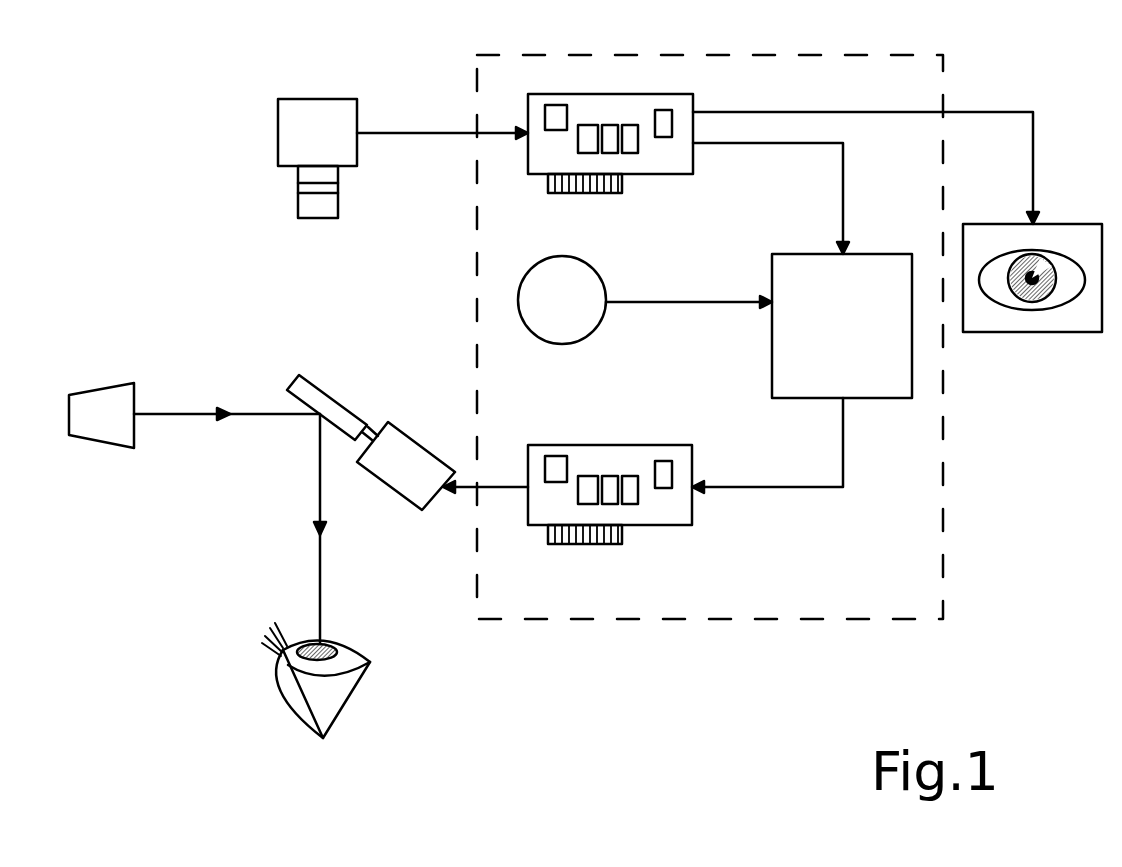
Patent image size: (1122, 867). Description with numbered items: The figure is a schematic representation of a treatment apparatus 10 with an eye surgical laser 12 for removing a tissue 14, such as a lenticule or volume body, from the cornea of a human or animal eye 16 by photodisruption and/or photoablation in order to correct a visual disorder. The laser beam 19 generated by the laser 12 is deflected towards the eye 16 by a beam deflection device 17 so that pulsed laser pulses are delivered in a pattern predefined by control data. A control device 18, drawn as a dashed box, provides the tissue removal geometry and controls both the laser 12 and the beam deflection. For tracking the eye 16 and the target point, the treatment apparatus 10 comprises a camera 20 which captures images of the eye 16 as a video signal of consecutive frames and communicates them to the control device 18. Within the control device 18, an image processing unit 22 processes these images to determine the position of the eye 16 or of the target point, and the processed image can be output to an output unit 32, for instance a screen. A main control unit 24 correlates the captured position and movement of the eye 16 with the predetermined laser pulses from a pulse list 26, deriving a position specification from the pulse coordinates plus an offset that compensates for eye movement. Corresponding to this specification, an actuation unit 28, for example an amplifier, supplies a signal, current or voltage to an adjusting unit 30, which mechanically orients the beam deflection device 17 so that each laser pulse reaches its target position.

The treatment apparatus 10 is at (416, 699).
The eye surgical laser 12 is at (103, 383).
The tissue 14 is at (305, 644).
The eye 16 is at (300, 709).
The beam deflection device 17 is at (297, 375).
The control device 18 is at (755, 620).
The laser beam 19 is at (204, 416).
The camera 20 is at (313, 98).
The image processing unit 22 is at (603, 92).
The main control unit 24 is at (912, 360).
The pulse list 26 is at (530, 302).
The actuation unit 28 is at (645, 527).
The adjusting unit 30 is at (428, 509).
The output unit 32 is at (1073, 222).